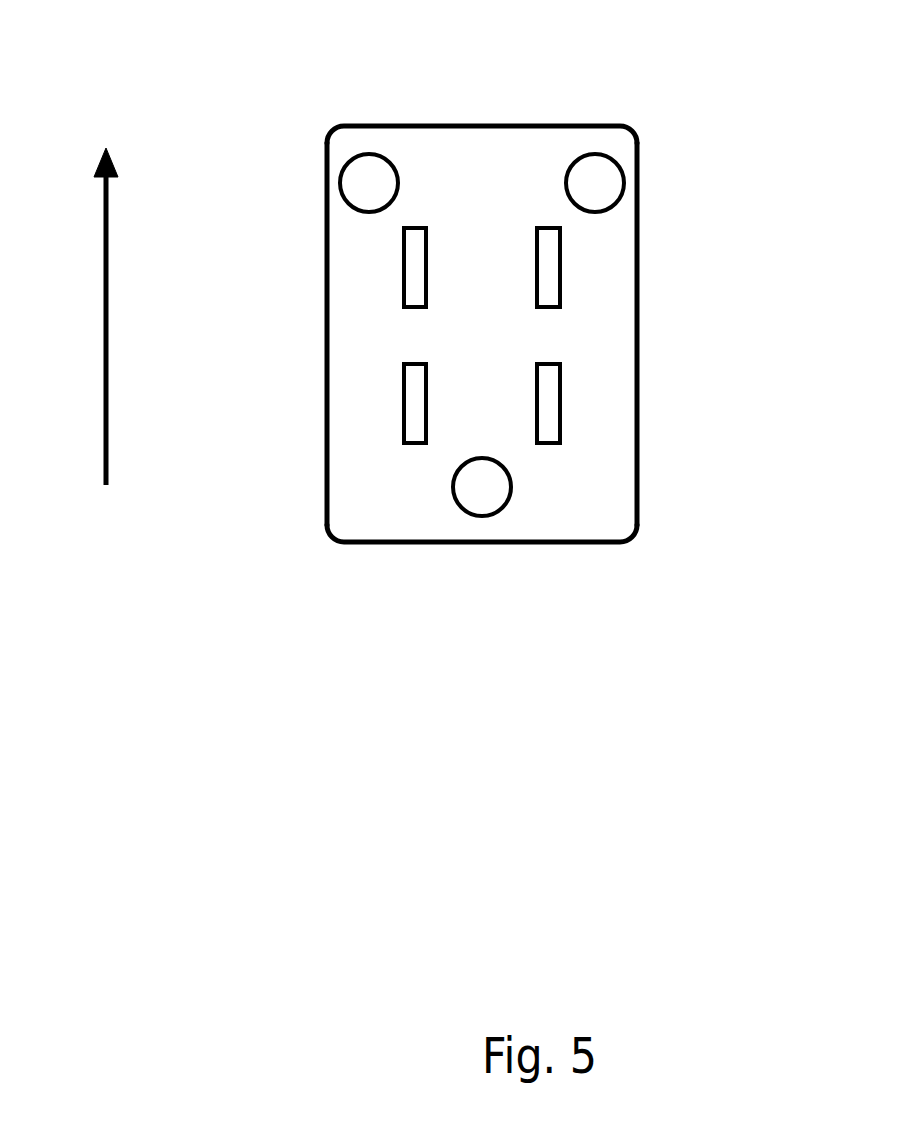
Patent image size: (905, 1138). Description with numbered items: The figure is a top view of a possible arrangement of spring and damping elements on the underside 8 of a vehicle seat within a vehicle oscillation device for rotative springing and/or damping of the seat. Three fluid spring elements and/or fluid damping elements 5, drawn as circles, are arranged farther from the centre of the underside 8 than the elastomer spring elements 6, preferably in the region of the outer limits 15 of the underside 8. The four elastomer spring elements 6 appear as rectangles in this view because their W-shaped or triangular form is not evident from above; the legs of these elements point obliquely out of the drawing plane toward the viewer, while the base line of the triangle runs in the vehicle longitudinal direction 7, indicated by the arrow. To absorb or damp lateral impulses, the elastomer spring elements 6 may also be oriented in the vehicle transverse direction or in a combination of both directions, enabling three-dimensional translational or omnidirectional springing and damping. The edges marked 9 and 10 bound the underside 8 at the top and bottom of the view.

The fluid spring elements and/or fluid damping elements 5 is at (595, 215).
The elastomer spring elements 6 is at (563, 402).
The vehicle longitudinal direction 7 is at (103, 223).
The underside of the vehicle seat 8 is at (596, 497).
The upper edge of connector face 9 is at (480, 126).
The lower edge of connector face 10 is at (530, 545).
The outer limits of the underside 15 is at (323, 315).